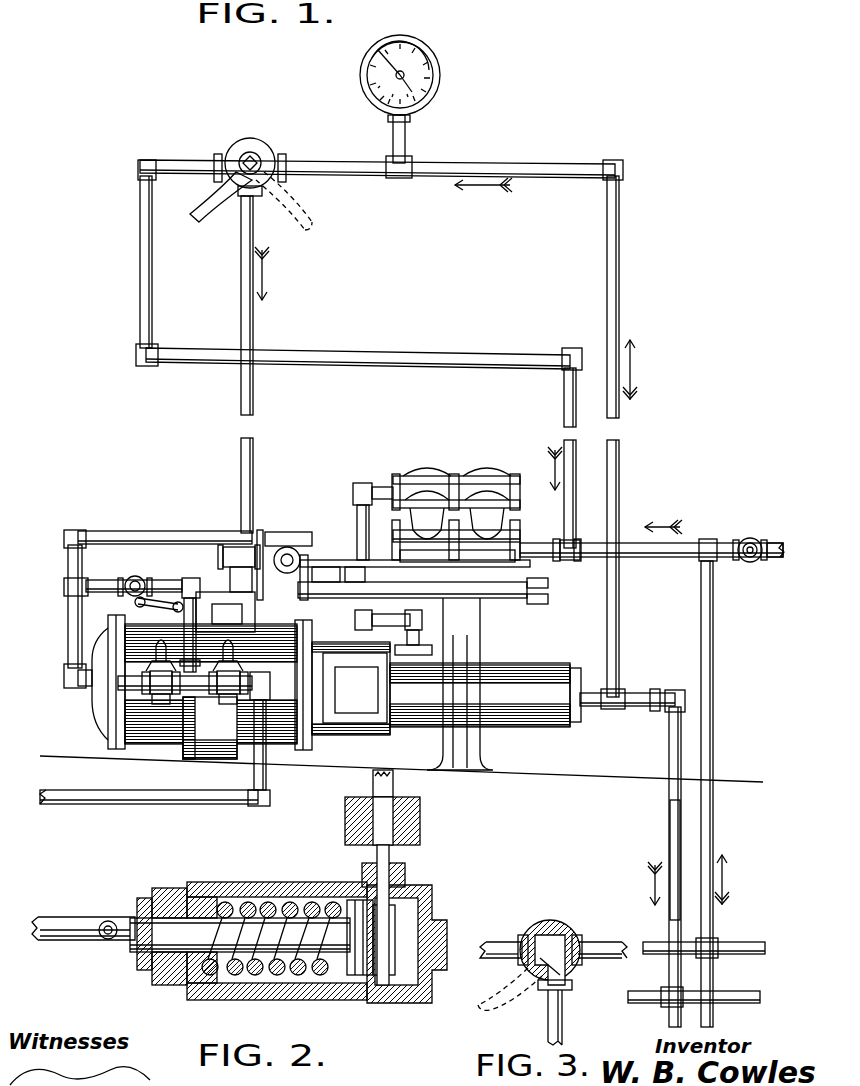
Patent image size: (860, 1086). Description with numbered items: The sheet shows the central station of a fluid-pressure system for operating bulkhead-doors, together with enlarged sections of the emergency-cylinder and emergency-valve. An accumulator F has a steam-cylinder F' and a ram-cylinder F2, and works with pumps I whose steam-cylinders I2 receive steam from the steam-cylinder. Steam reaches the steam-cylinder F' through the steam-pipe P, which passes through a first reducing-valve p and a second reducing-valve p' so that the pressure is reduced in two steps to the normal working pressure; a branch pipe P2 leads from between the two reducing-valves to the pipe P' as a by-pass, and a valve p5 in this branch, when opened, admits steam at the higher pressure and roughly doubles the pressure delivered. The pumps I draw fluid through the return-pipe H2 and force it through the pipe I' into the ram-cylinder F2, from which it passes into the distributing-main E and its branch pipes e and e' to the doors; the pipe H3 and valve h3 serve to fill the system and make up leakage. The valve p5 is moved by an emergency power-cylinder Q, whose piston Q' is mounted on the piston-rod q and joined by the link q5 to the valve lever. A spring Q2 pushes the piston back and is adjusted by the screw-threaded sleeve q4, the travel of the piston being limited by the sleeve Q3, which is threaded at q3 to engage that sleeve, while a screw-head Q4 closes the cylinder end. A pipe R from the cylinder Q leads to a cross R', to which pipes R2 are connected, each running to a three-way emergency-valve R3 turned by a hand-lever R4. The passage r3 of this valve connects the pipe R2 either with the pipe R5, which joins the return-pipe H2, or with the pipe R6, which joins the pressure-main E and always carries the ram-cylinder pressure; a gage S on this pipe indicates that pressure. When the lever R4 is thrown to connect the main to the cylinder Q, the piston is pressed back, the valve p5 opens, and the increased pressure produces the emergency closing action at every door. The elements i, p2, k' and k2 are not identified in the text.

In FIG. 1, the gage S is at (442, 72).
In FIG. 1, the pipe R6 is at (497, 175).
In FIG. 3, the pipe R6 is at (624, 936).
In FIG. 1, the pipe R5 is at (158, 302).
In FIG. 3, the pipe R5 is at (505, 940).
In FIG. 1, the emergency-valve R3 is at (248, 142).
In FIG. 3, the emergency-valve R3 is at (556, 935).
In FIG. 1, the hand-lever R4 is at (206, 222).
In FIG. 3, the hand-lever R4 is at (510, 1005).
In FIG. 1, the pipe R2 is at (253, 452).
In FIG. 2, the pipe R2 is at (395, 783).
In FIG. 3, the pipe R2 is at (563, 1020).
In FIG. 1, the pump I is at (456, 506).
In FIG. 1, the pipe I' is at (358, 516).
In FIG. 1, the steam-cylinder of pump I2 is at (350, 560).
In FIG. 1, the hand wheel i is at (287, 548).
In FIG. 1, the accumulator F is at (394, 684).
In FIG. 1, the ram-cylinder F2 is at (530, 728).
In FIG. 1, the steam-cylinder F' is at (213, 712).
In FIG. 1, the cylinder end p2 is at (105, 690).
In FIG. 1, the pipe P' is at (57, 609).
In FIG. 1, the steam-pipe P is at (155, 666).
In FIG. 1, the branch pipe P2 is at (172, 600).
In FIG. 1, the valve p5 is at (136, 562).
In FIG. 1, the link q5 is at (175, 603).
In FIG. 2, the link q5 is at (48, 917).
In FIG. 1, the emergency power-cylinder Q is at (225, 599).
In FIG. 2, the emergency power-cylinder Q is at (277, 925).
In FIG. 1, the cross R' is at (235, 536).
In FIG. 2, the cross R' is at (403, 821).
In FIG. 1, the reducing-valve p' is at (185, 714).
In FIG. 1, the reducing-valve p is at (227, 714).
In FIG. 1, the return-pipe H2 is at (625, 543).
In FIG. 1, the valve h3 is at (750, 538).
In FIG. 1, the pipe H3 is at (773, 560).
In FIG. 1, the distributing-main E is at (668, 838).
In FIG. 1, the cross fitting k' is at (653, 967).
In FIG. 1, the pipe k2 is at (750, 954).
In FIG. 1, the branch pipe e is at (638, 1015).
In FIG. 1, the branch pipe e' is at (756, 1014).
In FIG. 2, the piston-rod q is at (128, 945).
In FIG. 2, the screw-thread q3 is at (155, 965).
In FIG. 2, the screw-threaded sleeve q4 is at (170, 985).
In FIG. 2, the spring Q2 is at (296, 905).
In FIG. 2, the screw-head Q4 is at (435, 915).
In FIG. 2, the sleeve Q3 is at (232, 952).
In FIG. 2, the piston Q' is at (380, 970).
In FIG. 2, the pipe R is at (419, 912).
In FIG. 3, the passage r3 is at (532, 958).